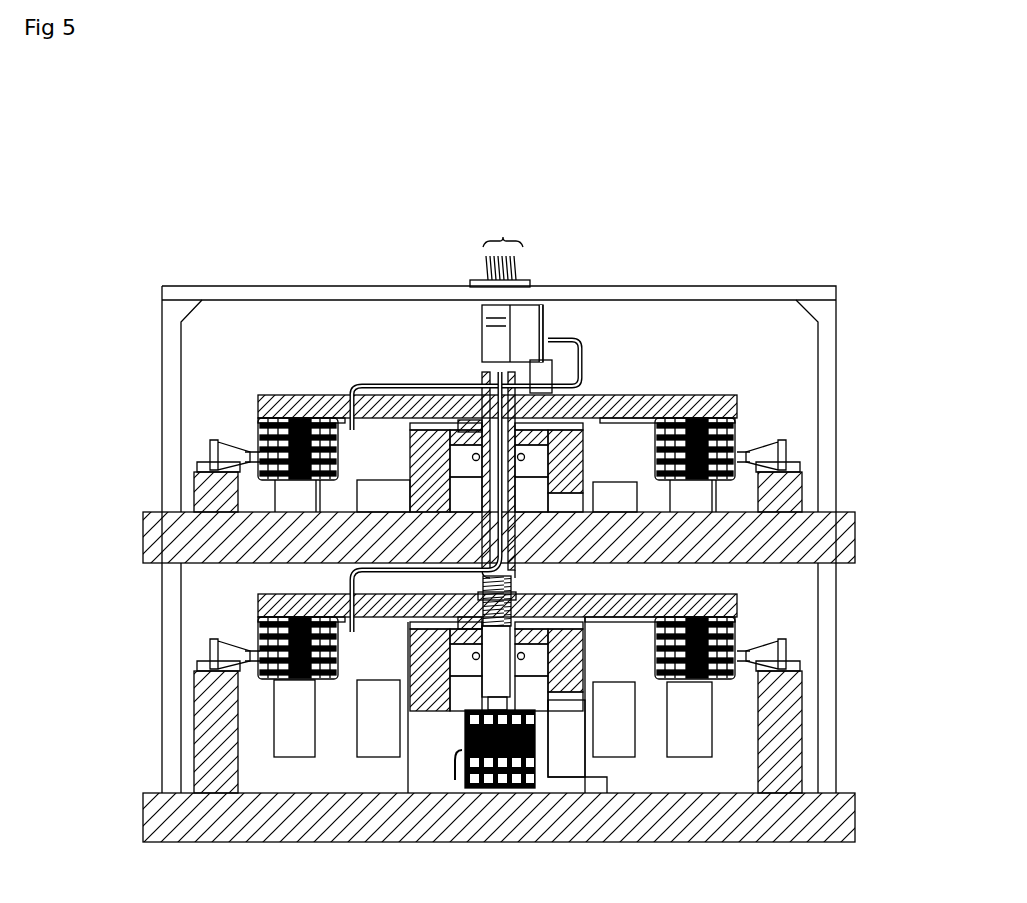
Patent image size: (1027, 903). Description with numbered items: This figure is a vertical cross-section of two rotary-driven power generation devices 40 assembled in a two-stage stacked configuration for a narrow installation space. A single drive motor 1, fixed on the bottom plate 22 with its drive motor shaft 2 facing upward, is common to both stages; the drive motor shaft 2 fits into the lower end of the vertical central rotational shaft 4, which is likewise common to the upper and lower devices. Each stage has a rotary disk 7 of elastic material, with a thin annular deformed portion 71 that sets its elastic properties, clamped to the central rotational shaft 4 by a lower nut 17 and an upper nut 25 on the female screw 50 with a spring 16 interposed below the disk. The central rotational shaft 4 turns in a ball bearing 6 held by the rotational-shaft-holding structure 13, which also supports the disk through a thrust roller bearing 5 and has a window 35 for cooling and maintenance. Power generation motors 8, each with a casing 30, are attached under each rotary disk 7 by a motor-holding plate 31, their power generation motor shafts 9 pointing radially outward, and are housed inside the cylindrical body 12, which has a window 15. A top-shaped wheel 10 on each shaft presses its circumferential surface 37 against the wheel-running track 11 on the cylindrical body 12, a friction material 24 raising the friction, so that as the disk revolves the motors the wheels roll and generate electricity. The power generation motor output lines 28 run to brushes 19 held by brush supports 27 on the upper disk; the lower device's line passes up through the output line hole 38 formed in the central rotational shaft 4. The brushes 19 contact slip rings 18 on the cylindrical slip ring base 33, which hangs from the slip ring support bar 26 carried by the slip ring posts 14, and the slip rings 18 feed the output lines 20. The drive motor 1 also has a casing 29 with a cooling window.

The drive motor 1 is at (465, 729).
The drive motor shaft 2 is at (505, 703).
The central rotational shaft 4 is at (482, 494).
The thrust roller bearing 5 is at (420, 427).
The ball bearing 6 is at (470, 457).
The rotary disk 7 is at (293, 396).
The power generation motor 8 is at (330, 478).
The power generation motor shaft 9 is at (242, 450).
The top-shaped wheel 10 is at (226, 440).
The wheel-running track 11 is at (208, 462).
The cylindrical body 12 is at (205, 488).
The rotational-shaft-holding structure 13 is at (410, 482).
The slip ring post 14 is at (182, 343).
The window 15 is at (358, 730).
The spring 16 is at (478, 420).
The lower nut 17 is at (550, 600).
The slip ring 18 is at (492, 318).
The brush 19 is at (522, 310).
The output line 20 is at (503, 245).
The bottom plate 22 is at (760, 563).
The friction material 24 is at (205, 664).
The upper nut 25 is at (486, 398).
The slip ring support bar 26 is at (718, 297).
The brush support 27 is at (546, 340).
The power generation motor output line 28 is at (582, 346).
The casing 29 is at (536, 752).
The casing 30 is at (716, 682).
The motor-holding plate 31 is at (258, 620).
The slip ring base 33 is at (480, 306).
The window 35 is at (408, 752).
The circumferential surface 37 is at (788, 448).
The output line hole 38 is at (485, 530).
The rotary-driven power generation device 40 is at (845, 500).
The female screw 50 is at (512, 630).
The deformed portion 71 is at (650, 417).